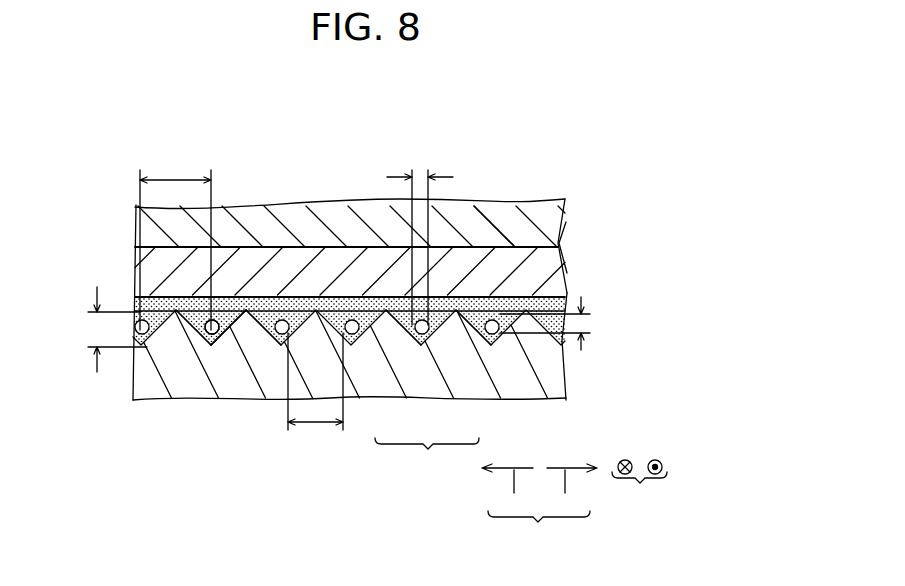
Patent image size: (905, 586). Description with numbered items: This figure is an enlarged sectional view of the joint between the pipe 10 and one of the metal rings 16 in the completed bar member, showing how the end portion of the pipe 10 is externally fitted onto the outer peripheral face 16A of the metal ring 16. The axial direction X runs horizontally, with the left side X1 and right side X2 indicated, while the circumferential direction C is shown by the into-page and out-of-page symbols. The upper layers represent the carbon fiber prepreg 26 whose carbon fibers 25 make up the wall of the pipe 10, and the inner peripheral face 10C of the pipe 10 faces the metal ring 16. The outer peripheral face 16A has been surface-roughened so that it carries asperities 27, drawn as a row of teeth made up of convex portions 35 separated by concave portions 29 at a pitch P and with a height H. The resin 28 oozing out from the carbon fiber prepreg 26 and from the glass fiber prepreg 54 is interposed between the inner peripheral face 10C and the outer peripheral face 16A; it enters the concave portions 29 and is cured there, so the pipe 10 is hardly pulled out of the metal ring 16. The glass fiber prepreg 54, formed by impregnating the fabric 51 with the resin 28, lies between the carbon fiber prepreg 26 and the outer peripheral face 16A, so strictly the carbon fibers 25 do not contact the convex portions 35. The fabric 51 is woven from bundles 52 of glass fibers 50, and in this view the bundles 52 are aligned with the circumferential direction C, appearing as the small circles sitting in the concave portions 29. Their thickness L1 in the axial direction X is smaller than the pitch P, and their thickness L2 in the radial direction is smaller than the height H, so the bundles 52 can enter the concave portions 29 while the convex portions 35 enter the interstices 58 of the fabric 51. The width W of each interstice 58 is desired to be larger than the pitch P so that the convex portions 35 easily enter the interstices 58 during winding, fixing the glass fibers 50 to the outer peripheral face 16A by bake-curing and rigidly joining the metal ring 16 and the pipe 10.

The pipe 10 is at (122, 205).
The inner peripheral face of the pipe 10C is at (299, 297).
The metal ring 16 is at (548, 372).
The outer peripheral face of the metal ring 16A is at (273, 338).
The carbon fibers 25 is at (596, 251).
The carbon fiber prepreg 26 is at (565, 217).
The asperities 27 is at (427, 458).
The resin 28 is at (508, 297).
The concave portions 29 is at (470, 325).
The convex portions 35 is at (392, 322).
The glass fibers 50 is at (212, 327).
The fabric 51 is at (411, 322).
The bundles of glass fibers 52 is at (350, 231).
The glass fiber prepreg 54 is at (205, 333).
The interstices 58 is at (214, 298).
The pitch P is at (173, 178).
The height of the convex portions H is at (97, 325).
The thickness of the bundles in the axial or circumferential direction L1 is at (423, 170).
The thickness of the bundles in the radial direction L2 is at (590, 323).
The width of the interstices W is at (318, 424).
The axial direction X is at (539, 532).
The left side X1 is at (507, 491).
The right side X2 is at (572, 491).
The circumferential direction C is at (639, 490).